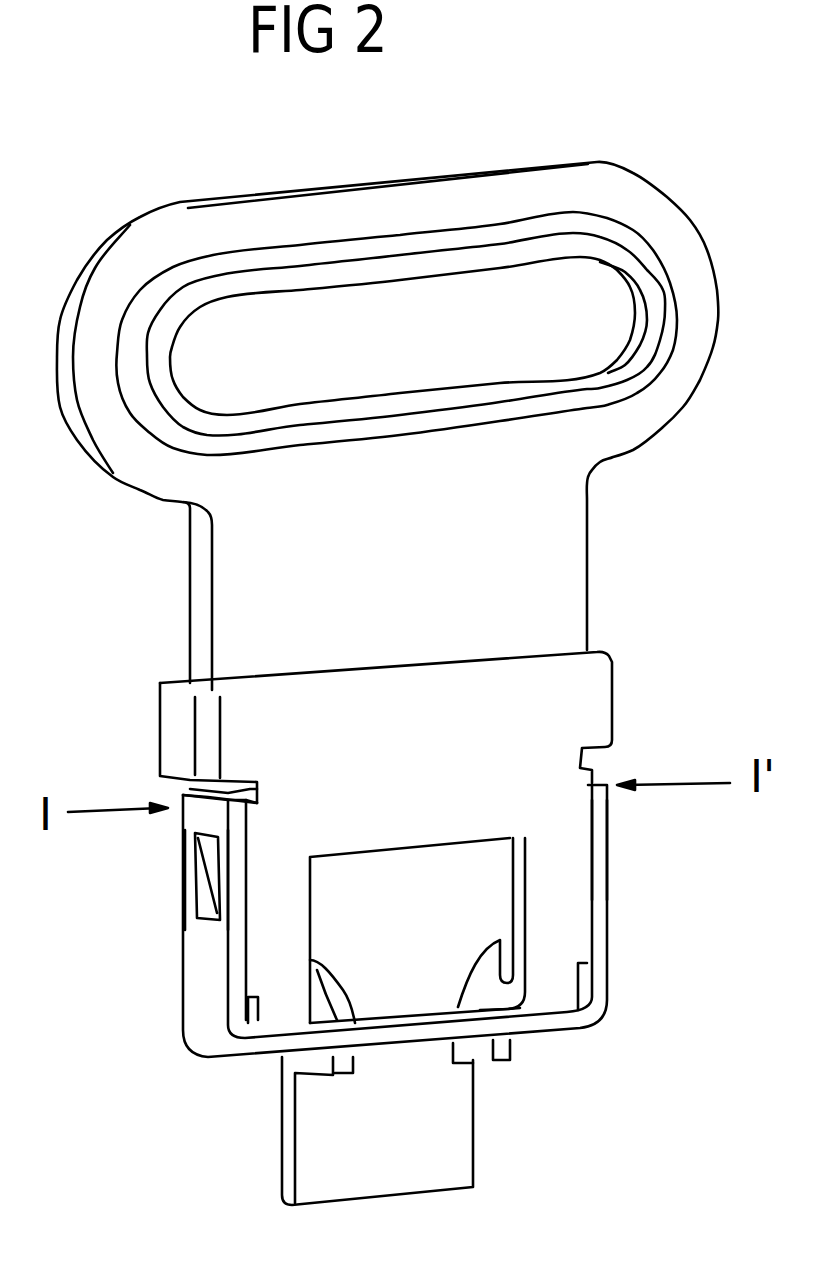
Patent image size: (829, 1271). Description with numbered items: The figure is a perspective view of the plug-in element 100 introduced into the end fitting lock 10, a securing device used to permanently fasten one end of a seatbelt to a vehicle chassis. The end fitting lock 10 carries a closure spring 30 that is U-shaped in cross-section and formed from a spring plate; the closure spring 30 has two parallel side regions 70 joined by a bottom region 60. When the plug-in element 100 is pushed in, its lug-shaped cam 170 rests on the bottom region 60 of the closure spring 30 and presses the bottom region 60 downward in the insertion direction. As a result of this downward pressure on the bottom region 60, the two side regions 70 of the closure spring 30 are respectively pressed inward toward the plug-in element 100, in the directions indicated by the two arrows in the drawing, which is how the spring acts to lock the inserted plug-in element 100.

The plug-in element 100 is at (652, 513).
The end fitting lock 10 is at (670, 693).
The closure spring 30 is at (708, 912).
The side regions 70 is at (708, 837).
The bottom region 60 is at (627, 1058).
The lug-shaped cam 170 is at (527, 1087).